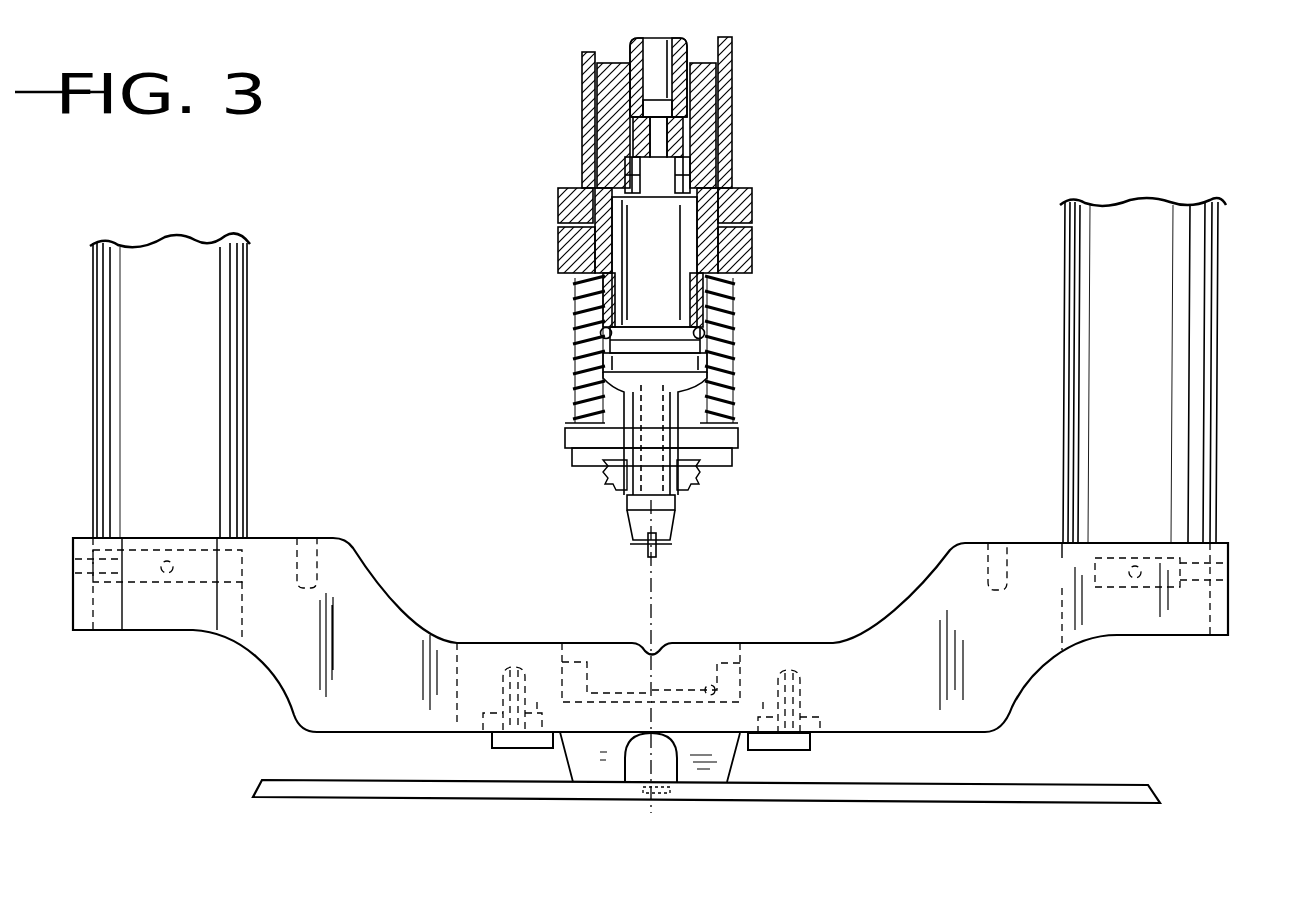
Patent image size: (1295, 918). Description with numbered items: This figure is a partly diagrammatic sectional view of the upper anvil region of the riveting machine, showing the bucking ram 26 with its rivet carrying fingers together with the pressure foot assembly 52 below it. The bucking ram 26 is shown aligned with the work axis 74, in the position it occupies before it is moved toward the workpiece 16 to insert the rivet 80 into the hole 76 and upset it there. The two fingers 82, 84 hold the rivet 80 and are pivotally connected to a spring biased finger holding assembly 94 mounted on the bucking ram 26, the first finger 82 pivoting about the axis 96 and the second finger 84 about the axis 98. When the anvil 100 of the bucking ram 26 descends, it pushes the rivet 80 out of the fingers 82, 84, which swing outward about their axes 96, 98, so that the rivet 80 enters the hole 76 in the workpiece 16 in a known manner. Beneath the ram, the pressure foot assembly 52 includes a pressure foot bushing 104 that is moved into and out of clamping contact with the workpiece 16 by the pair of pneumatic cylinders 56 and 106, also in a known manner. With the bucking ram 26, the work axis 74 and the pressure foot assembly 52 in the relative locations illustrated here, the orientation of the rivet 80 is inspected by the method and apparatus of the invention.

The workpiece 16 is at (1117, 810).
The bucking ram 26 is at (765, 107).
The pressure foot assembly 52 is at (250, 688).
The pneumatic cylinder 56 is at (247, 420).
The work axis 74 is at (650, 600).
The hole 76 is at (670, 793).
The rivet 80 is at (668, 563).
The finger 82 is at (632, 547).
The finger 84 is at (668, 542).
The spring biased finger holding assembly 94 is at (745, 372).
The pivot axis 96 is at (612, 470).
The pivot axis 98 is at (695, 475).
The anvil 100 is at (742, 441).
The pressure foot bushing 104 is at (722, 760).
The pneumatic cylinder 106 is at (1066, 288).